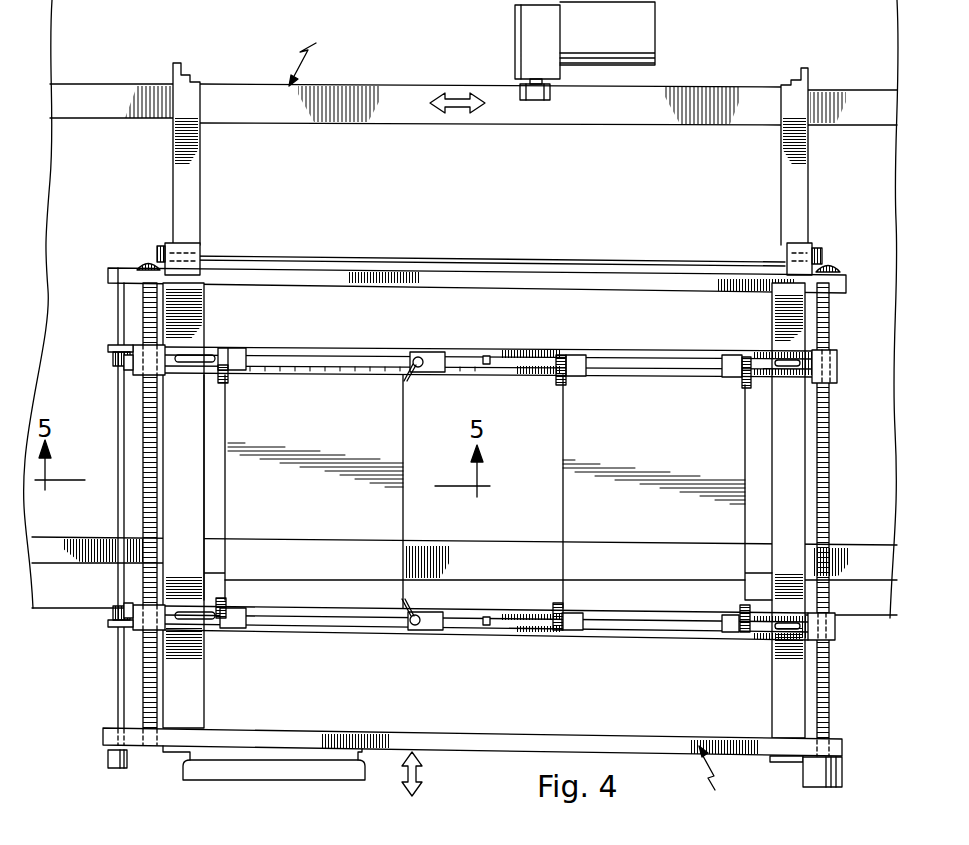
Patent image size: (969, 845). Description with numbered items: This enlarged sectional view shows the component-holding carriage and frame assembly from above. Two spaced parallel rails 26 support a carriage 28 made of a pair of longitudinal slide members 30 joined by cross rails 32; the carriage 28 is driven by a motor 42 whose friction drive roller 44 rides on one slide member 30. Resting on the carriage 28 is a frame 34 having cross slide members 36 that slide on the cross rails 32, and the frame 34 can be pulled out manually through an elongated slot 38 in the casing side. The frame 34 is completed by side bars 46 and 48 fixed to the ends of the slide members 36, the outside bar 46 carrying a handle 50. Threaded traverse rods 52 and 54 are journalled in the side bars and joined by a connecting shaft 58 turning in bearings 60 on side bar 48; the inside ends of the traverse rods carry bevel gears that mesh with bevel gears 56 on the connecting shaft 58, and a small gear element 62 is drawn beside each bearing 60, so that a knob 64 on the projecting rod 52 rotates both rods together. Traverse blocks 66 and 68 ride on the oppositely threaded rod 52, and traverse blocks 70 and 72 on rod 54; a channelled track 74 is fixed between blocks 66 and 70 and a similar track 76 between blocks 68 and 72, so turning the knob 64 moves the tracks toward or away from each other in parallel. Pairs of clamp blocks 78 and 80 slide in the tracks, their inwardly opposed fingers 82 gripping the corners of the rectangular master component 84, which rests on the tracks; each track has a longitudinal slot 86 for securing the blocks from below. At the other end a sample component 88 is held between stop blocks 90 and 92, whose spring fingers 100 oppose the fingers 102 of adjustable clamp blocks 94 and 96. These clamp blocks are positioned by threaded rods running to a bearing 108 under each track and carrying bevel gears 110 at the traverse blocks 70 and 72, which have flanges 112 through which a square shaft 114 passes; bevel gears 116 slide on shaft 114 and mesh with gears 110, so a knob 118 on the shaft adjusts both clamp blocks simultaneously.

The rails 26 is at (113, 112).
The carriage 28 is at (307, 51).
The longitudinal slide members 30 is at (655, 113).
The cross rails 32 is at (192, 165).
The frame 34 is at (718, 779).
The cross slide members 36 is at (200, 312).
The elongated slot 38 is at (874, 620).
The motor 42 is at (655, 48).
The friction drive roller 44 is at (533, 101).
The outside side bar 46 is at (617, 742).
The side bar 48 is at (652, 281).
The handle 50 is at (292, 770).
The threaded traverse rod 52 is at (830, 695).
The threaded traverse rod 54 is at (142, 672).
The bevel gears 56 is at (140, 262).
The connecting shaft 58 is at (505, 257).
The bearings 60 is at (185, 246).
The bevel gear 62 is at (160, 246).
The knob 64 is at (820, 780).
The traverse block 66 is at (835, 637).
The traverse block 68 is at (838, 370).
The traverse block 70 is at (138, 630).
The traverse block 72 is at (137, 347).
The channelled track 74 is at (640, 636).
The track 76 is at (652, 352).
The clamp blocks 78 is at (577, 356).
The clamp blocks 80 is at (735, 356).
The fingers 82 is at (568, 383).
The master component 84 is at (583, 445).
The longitudinal slot 86 is at (353, 352).
The sample component 88 is at (395, 517).
The stop block 90 is at (428, 632).
The stop block 92 is at (438, 352).
The adjustable clamp block 94 is at (242, 630).
The adjustable clamp block 96 is at (238, 352).
The spring fingers 100 is at (410, 378).
The fingers 102 is at (230, 378).
The bearing 108 is at (487, 356).
The bevel gears 110 is at (124, 370).
The flanges 112 is at (120, 345).
The shaft 114 is at (118, 497).
The bevel gears 116 is at (112, 357).
The knob 118 is at (106, 758).